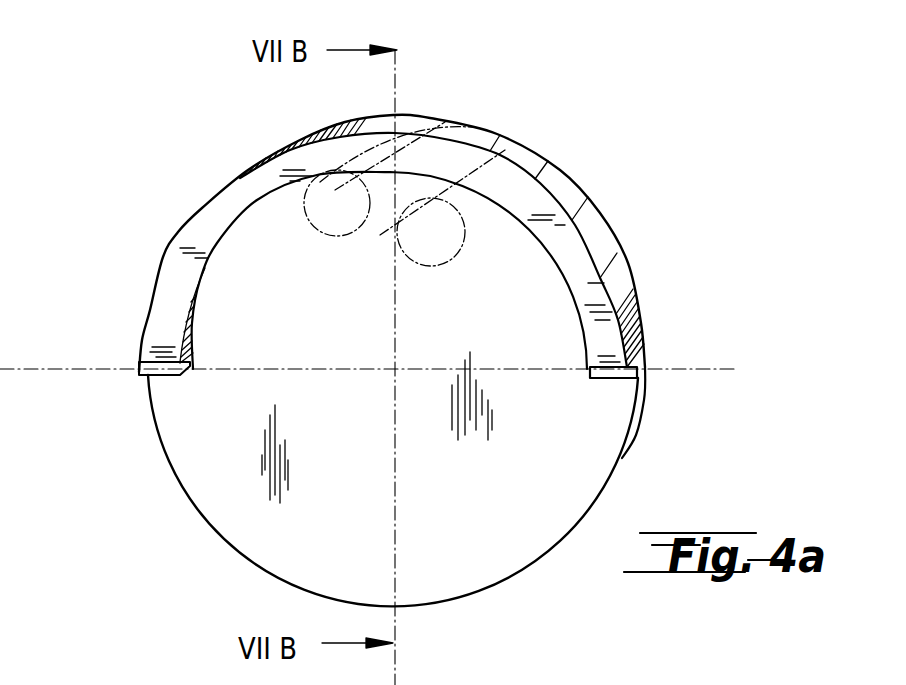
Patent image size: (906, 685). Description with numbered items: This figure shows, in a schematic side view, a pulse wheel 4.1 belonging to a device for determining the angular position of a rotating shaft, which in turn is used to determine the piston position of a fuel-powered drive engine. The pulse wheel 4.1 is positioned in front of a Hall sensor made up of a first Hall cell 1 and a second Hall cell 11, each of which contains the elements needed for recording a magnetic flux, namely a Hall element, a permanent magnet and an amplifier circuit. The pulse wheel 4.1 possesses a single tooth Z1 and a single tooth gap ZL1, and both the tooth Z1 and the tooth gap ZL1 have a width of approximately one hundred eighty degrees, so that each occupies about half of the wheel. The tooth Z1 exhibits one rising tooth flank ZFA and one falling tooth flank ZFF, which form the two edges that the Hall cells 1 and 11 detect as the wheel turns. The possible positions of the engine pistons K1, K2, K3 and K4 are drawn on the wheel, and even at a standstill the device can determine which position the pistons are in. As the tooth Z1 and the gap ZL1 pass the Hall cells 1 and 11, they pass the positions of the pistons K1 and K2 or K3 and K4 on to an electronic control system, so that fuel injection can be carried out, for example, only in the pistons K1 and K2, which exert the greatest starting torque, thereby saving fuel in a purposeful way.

The first Hall cell 1 is at (418, 168).
The second Hall cell 11 is at (513, 156).
The piston K1 is at (230, 218).
The piston K2 is at (562, 247).
The tooth Z1 is at (606, 332).
The falling tooth flank ZFF is at (160, 378).
The rising tooth flank ZFA is at (604, 388).
The tooth gap ZL1 is at (572, 450).
The pulse wheel 4.1 is at (145, 470).
The piston K3 is at (236, 513).
The piston K4 is at (529, 518).